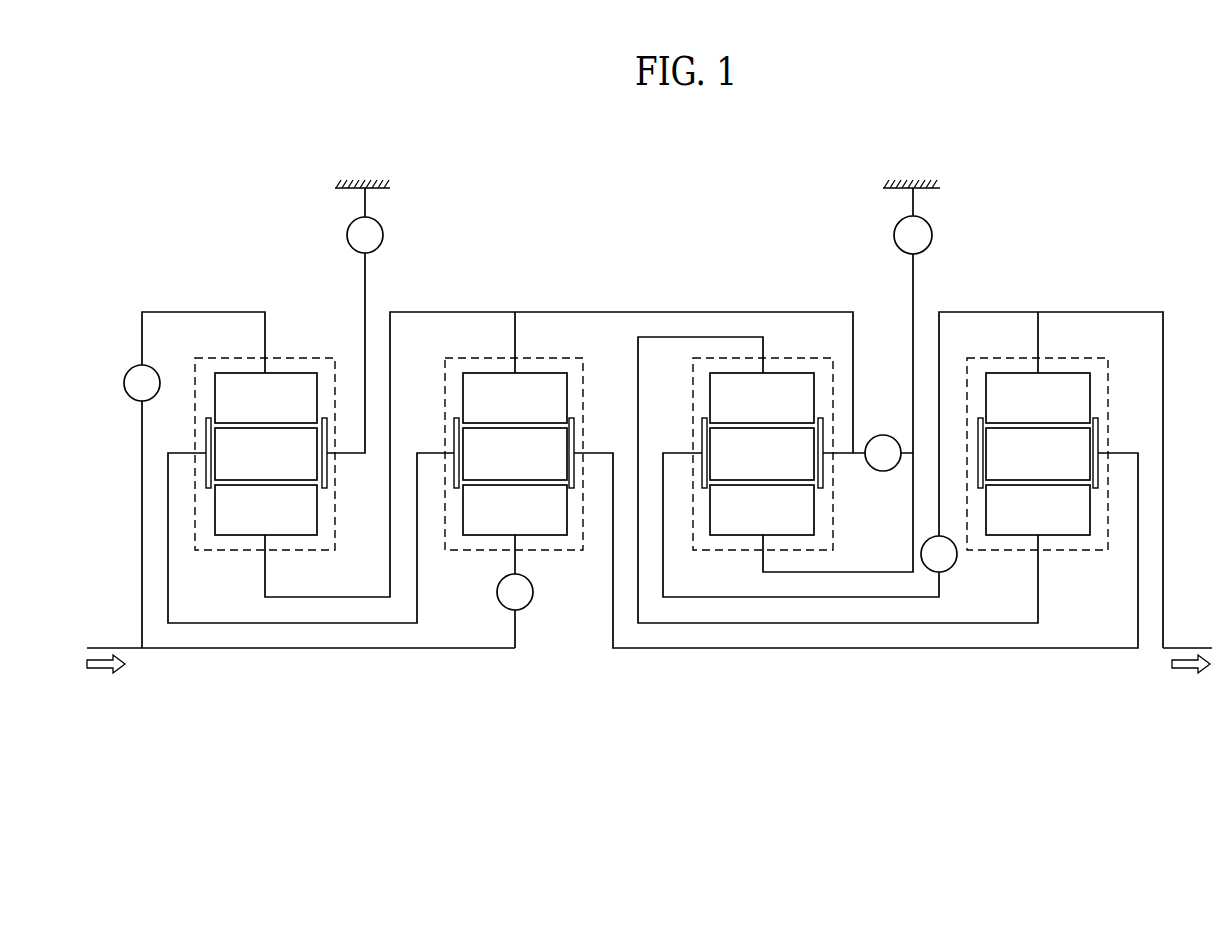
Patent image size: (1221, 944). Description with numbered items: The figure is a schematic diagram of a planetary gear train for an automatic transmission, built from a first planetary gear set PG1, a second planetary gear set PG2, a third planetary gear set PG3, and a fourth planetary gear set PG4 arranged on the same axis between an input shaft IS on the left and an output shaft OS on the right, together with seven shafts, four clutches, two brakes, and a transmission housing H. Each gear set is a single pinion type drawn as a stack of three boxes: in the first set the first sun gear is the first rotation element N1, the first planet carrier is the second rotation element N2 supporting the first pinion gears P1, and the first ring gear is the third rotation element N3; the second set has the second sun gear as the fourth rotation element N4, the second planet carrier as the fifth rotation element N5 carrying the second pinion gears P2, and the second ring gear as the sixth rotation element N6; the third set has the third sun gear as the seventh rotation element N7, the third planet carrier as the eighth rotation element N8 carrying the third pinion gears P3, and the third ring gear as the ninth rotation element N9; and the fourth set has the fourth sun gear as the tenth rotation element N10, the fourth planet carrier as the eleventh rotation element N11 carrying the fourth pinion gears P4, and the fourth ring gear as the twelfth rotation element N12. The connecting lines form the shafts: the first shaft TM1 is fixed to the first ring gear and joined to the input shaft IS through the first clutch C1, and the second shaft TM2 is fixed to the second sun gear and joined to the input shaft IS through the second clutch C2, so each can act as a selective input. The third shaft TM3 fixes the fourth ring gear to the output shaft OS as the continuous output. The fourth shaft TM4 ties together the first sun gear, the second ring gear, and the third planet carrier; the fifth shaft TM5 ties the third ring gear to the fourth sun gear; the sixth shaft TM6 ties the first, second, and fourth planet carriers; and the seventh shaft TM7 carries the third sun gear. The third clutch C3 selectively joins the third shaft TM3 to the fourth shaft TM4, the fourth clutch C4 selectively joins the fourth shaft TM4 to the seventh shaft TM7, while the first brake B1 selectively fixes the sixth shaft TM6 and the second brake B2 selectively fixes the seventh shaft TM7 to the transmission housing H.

The transmission housing H is at (365, 187).
The first brake B1 is at (365, 220).
The second brake B2 is at (913, 221).
The first clutch C1 is at (142, 383).
The second clutch C2 is at (515, 611).
The third clutch C3 is at (810, 525).
The fourth clutch C4 is at (868, 453).
The first shaft TM1 is at (201, 312).
The second shaft TM2 is at (518, 562).
The third shaft TM3 is at (1086, 312).
The fourth shaft TM4 is at (599, 312).
The fifth shaft TM5 is at (836, 623).
The sixth shaft TM6 is at (366, 270).
The seventh shaft TM7 is at (914, 270).
The input shaft IS is at (103, 648).
The output shaft OS is at (1186, 648).
The first planetary gear set PG1 is at (225, 565).
The second planetary gear set PG2 is at (470, 565).
The third planetary gear set PG3 is at (735, 565).
The fourth planetary gear set PG4 is at (1077, 565).
The first rotation element N1 is at (266, 510).
The second rotation element N2 is at (206, 440).
The third rotation element N3 is at (266, 398).
The fourth rotation element N4 is at (515, 510).
The fifth rotation element N5 is at (576, 443).
The sixth rotation element N6 is at (515, 398).
The seventh rotation element N7 is at (762, 510).
The eighth rotation element N8 is at (702, 445).
The ninth rotation element N9 is at (762, 398).
The tenth rotation element N10 is at (1038, 510).
The eleventh rotation element N11 is at (1099, 428).
The twelfth rotation element N12 is at (1038, 398).
The first pinion gears P1 is at (266, 454).
The second pinion gears P2 is at (515, 454).
The third pinion gears P3 is at (762, 454).
The fourth pinion gears P4 is at (1038, 454).